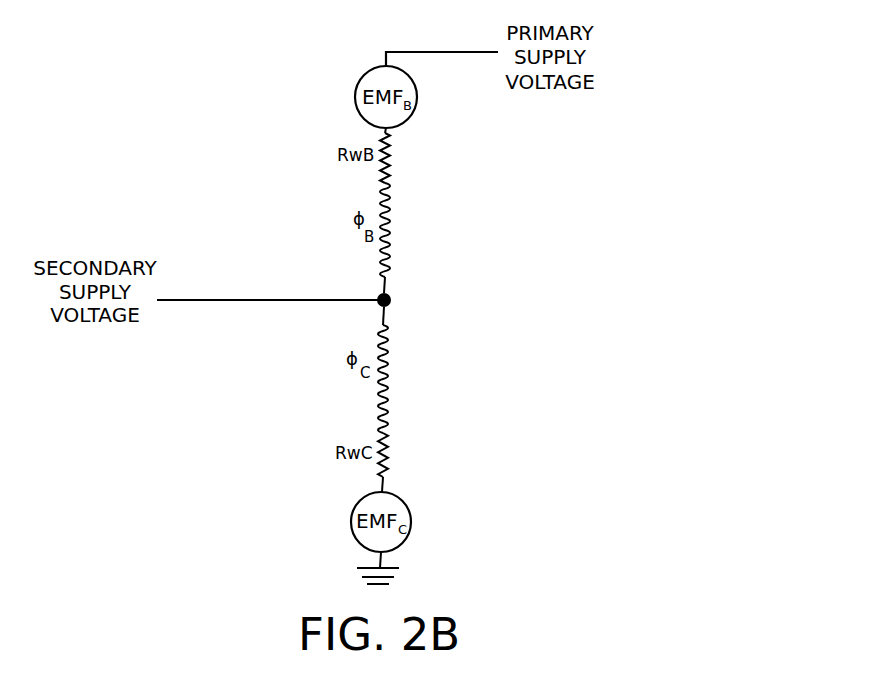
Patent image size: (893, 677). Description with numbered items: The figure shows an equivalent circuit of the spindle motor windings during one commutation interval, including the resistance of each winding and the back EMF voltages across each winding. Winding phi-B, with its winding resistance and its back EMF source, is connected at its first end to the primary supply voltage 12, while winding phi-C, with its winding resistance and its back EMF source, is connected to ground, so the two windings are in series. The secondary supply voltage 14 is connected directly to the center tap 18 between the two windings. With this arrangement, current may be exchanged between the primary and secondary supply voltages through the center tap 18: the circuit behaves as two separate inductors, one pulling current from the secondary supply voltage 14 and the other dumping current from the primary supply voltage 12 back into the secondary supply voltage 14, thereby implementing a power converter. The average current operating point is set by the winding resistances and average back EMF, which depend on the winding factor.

The primary supply voltage 12 is at (440, 51).
The secondary supply voltage 14 is at (243, 298).
The center tap 18 is at (393, 305).